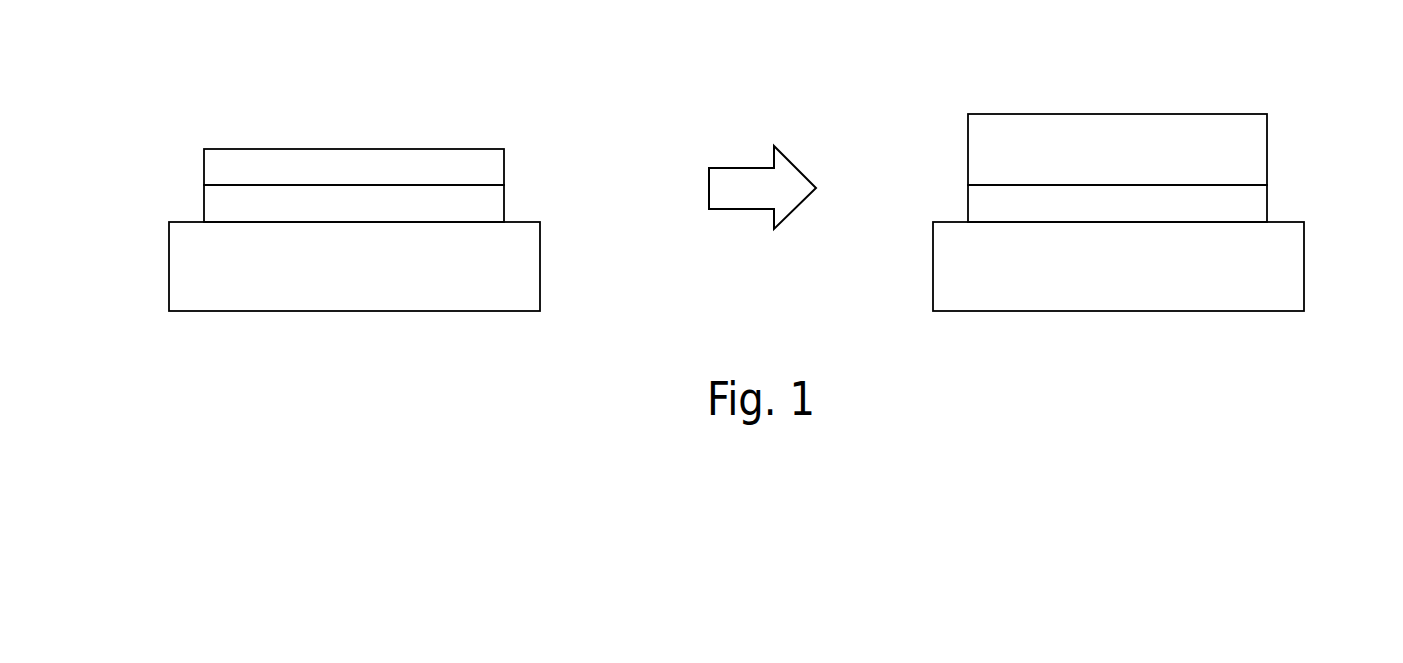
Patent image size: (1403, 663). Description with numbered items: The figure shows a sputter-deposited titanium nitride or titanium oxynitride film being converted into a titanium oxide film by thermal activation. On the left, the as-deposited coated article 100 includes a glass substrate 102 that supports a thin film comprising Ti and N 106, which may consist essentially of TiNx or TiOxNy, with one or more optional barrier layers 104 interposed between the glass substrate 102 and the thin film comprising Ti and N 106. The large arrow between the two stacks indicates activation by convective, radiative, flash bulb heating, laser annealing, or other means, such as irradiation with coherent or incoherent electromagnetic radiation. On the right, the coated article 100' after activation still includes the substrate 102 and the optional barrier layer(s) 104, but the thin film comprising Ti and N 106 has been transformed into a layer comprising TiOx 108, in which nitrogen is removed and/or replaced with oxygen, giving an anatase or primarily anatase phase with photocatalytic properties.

The coated article 100 is at (369, 108).
The coated article post activation 100' is at (1170, 108).
The glass substrate 102 is at (540, 267).
The optional barrier layer(s) 104 is at (204, 204).
The thin film comprising Ti and N 106 is at (204, 168).
The layer comprising TiOx 108 is at (1267, 149).